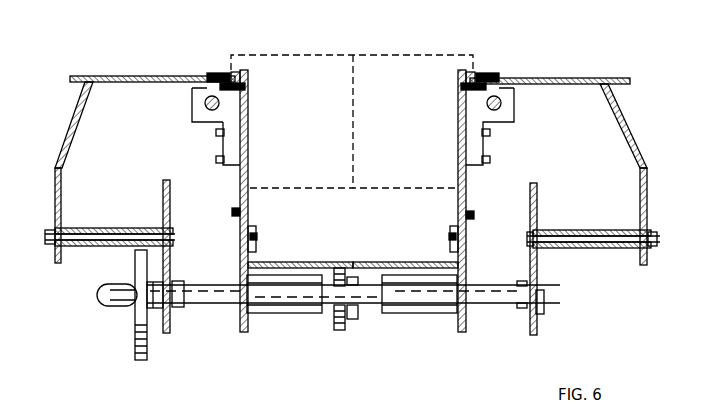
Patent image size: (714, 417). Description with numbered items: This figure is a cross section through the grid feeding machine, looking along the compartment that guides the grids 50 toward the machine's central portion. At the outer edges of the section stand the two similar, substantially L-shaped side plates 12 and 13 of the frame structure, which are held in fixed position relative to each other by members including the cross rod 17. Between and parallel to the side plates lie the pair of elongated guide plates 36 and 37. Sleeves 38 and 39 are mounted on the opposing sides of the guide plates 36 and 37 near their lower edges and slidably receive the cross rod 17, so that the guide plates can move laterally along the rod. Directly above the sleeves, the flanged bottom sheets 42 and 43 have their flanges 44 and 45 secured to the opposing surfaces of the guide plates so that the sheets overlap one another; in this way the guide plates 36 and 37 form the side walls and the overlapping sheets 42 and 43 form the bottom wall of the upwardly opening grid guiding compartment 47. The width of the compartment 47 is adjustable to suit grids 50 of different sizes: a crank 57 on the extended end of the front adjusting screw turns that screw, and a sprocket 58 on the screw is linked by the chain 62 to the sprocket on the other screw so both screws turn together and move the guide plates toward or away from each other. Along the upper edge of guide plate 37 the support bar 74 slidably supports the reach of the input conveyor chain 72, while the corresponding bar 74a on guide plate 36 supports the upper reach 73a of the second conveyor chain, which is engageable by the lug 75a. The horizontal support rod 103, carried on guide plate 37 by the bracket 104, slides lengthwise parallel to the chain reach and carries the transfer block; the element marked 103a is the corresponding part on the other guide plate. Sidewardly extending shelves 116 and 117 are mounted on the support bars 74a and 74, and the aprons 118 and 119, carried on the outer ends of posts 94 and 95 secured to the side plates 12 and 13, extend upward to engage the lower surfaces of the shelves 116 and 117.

The grid 50 is at (338, 55).
The shelf 117 is at (134, 76).
The shelf 116 is at (588, 78).
The apron 119 is at (64, 152).
The apron 118 is at (645, 150).
The side plate 13 is at (165, 197).
The side plate 12 is at (537, 212).
The post 95 is at (88, 248).
The post 94 is at (585, 250).
The guide plate 37 is at (248, 141).
The guide plate 36 is at (458, 141).
The support bar 74 is at (245, 93).
The support bar 74a is at (461, 93).
The lug 75a is at (470, 72).
The upper reach 73a is at (478, 73).
The support rod 103 is at (204, 106).
The bracket 104 is at (208, 126).
The right bracket 103a is at (514, 112).
The input conveyor chain 72 is at (232, 210).
The grid guiding compartment 47 is at (462, 190).
The flange 44 is at (256, 248).
The flange 45 is at (450, 246).
The flanged bottom sheet 42 is at (318, 262).
The flanged bottom sheet 43 is at (415, 262).
The cross rod 17 is at (495, 303).
The sleeve 39 is at (295, 313).
The sleeve 38 is at (433, 313).
The sprocket 58 is at (358, 318).
The chain 62 is at (340, 330).
The crank 57 is at (135, 336).